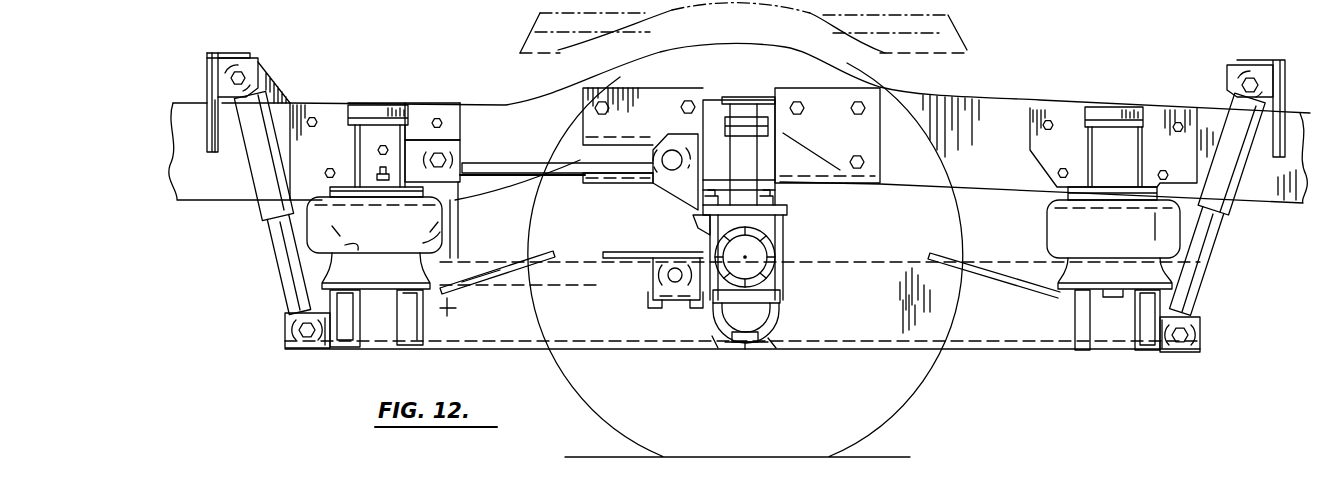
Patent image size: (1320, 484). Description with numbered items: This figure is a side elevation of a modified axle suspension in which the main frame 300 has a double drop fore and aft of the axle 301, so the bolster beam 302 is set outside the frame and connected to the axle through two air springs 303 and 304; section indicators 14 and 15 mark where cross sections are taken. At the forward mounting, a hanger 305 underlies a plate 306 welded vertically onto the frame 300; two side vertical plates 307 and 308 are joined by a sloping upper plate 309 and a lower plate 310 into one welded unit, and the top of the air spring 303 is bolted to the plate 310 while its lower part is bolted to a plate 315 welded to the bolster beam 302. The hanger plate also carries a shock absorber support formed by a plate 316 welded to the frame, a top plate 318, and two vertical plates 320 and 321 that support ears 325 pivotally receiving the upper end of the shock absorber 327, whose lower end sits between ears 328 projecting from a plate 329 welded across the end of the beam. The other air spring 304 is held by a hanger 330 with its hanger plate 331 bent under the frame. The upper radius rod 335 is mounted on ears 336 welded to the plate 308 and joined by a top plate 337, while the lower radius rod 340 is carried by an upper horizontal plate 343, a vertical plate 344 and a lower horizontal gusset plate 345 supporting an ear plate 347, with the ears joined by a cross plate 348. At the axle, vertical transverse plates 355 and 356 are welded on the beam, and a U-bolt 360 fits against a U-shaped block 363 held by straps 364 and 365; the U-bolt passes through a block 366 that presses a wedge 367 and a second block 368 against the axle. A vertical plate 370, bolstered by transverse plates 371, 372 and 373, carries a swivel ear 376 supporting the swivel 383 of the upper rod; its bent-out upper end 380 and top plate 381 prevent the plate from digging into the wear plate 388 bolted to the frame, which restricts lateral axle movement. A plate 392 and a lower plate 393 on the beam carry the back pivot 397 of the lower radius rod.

The section line 14- 14 is at (1267, 203).
The section line 15- 15 is at (698, 206).
The main frame 300 is at (988, 103).
The axle 301 is at (778, 270).
The bolster beam 302 is at (862, 348).
The air spring 303 is at (305, 240).
The air spring 304 is at (1050, 237).
The hanger 305 is at (408, 102).
The plate 306 is at (326, 103).
The side vertical plate 307 is at (355, 150).
The side vertical plate 308 is at (414, 113).
The sloping upper plate 309 is at (380, 105).
The lower plate 310 is at (343, 185).
The plate 315 is at (323, 282).
The plate 316 is at (272, 90).
The top plate 318 is at (222, 55).
The vertical plate 320 is at (206, 72).
The vertical plate 321 is at (213, 135).
The ears 325 is at (258, 62).
The shock absorber 327 is at (262, 218).
The ears 328 is at (287, 341).
The plate 329 is at (326, 346).
The hanger 330 is at (1138, 103).
The bracket plate 331 is at (1032, 145).
The upper radius rod 335 is at (522, 160).
The ears 336 is at (462, 144).
The top plate 337 is at (455, 127).
The lower radius rod 340 is at (472, 268).
The upper horizontal plate 343 is at (425, 212).
The vertical plate 344 is at (356, 266).
The lower horizontal gusset plate 345 is at (322, 240).
The vertical plate 347 is at (448, 318).
The cross plate 348 is at (432, 330).
The vertical transverse plate 355 is at (712, 324).
The vertical transverse plate 356 is at (781, 322).
The U-bolt 360 is at (778, 348).
The U-shaped block 363 is at (716, 346).
The strap 364 is at (752, 346).
The strap 365 is at (782, 298).
The block 366 is at (790, 212).
The wedge 367 is at (694, 228).
The second block 368 is at (786, 233).
The vertical plate 370 is at (800, 187).
The transverse plate 371 is at (696, 196).
The transverse plate 372 is at (705, 140).
The transverse plate 373 is at (792, 155).
The swivel ear 376 is at (652, 185).
The upper end 380 is at (724, 97).
The top plate 381 is at (747, 123).
The swivel 383 is at (668, 152).
The wear plate 388 is at (800, 70).
The plate 392 is at (605, 252).
The lower plate 393 is at (650, 308).
The back pivot 397 is at (668, 278).